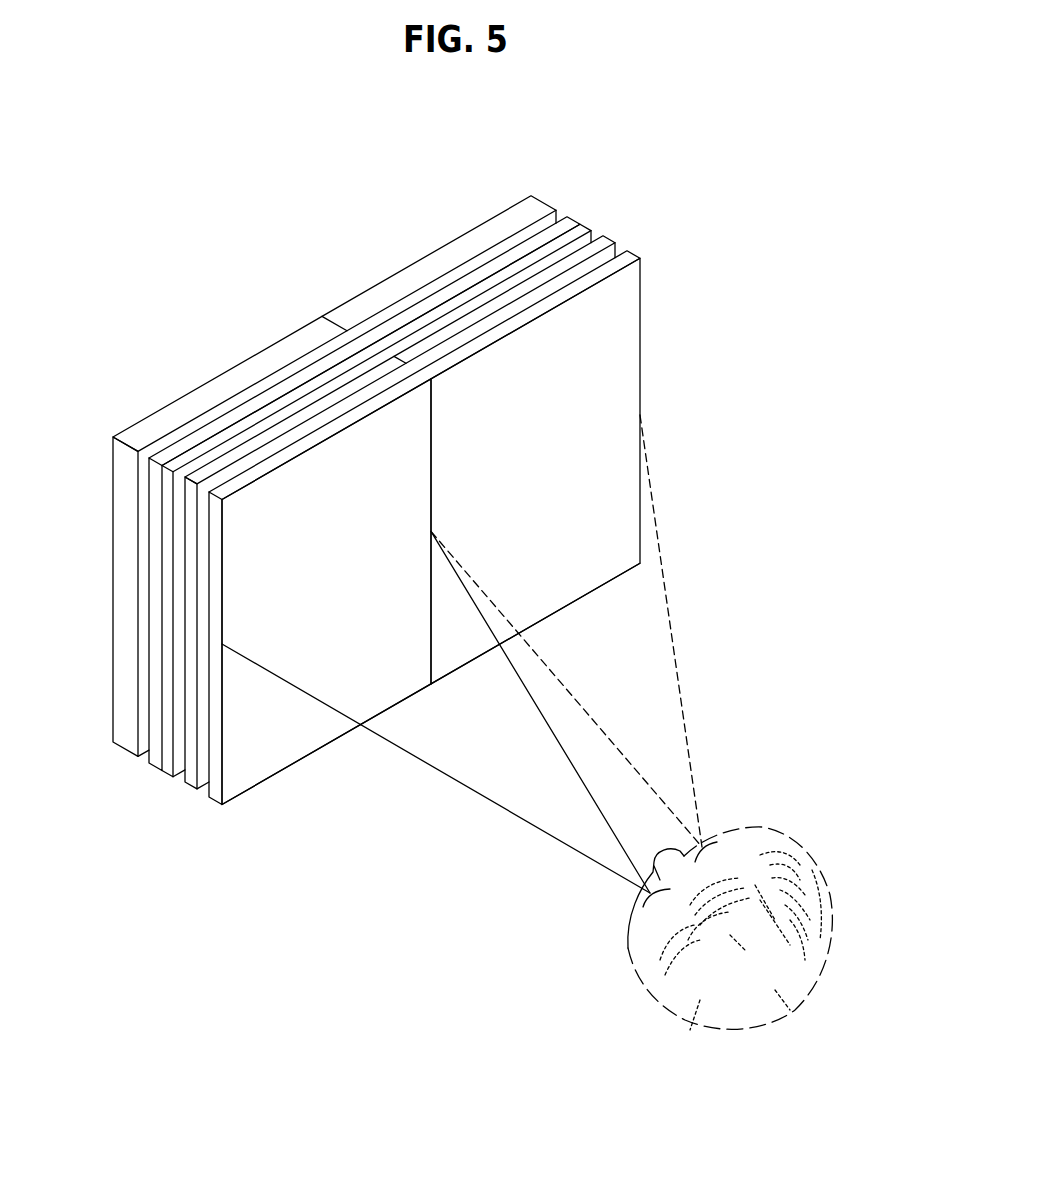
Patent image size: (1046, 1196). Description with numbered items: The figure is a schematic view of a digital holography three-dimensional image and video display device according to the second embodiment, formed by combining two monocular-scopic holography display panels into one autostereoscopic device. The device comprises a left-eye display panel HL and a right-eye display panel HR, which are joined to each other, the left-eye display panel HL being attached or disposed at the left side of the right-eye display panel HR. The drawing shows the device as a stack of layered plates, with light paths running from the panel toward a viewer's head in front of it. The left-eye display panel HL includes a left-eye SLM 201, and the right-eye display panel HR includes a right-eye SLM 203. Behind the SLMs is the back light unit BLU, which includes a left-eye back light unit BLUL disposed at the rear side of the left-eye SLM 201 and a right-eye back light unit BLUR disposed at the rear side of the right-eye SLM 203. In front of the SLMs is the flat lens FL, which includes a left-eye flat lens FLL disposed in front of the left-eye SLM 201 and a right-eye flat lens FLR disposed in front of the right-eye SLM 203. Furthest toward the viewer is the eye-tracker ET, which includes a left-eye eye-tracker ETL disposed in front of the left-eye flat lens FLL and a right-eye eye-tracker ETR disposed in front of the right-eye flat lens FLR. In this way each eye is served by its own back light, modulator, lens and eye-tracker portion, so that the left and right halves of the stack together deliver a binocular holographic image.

The left-eye SLM 201 is at (163, 776).
The right-eye SLM 203 is at (585, 218).
The flat lens FL is at (367, 512).
The left-eye flat lens FLL is at (285, 428).
The right-eye flat lens FLR is at (402, 353).
The back light unit BLU is at (334, 470).
The left-eye back light unit BLUL is at (315, 333).
The right-eye back light unit BLUR is at (452, 252).
The eye-tracker ET is at (484, 528).
The left-eye eye-tracker ETL is at (395, 438).
The right-eye eye-tracker ETR is at (615, 328).
The left-eye display panel HL is at (316, 758).
The right-eye display panel HR is at (569, 617).